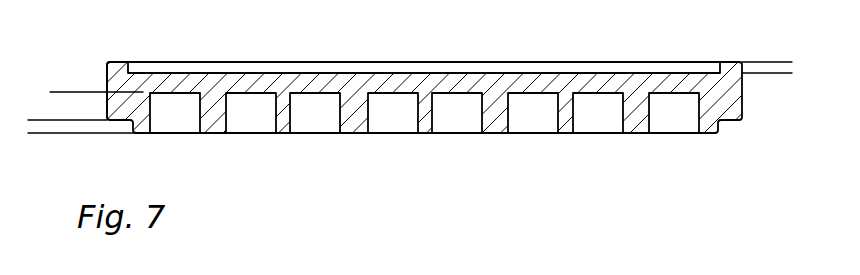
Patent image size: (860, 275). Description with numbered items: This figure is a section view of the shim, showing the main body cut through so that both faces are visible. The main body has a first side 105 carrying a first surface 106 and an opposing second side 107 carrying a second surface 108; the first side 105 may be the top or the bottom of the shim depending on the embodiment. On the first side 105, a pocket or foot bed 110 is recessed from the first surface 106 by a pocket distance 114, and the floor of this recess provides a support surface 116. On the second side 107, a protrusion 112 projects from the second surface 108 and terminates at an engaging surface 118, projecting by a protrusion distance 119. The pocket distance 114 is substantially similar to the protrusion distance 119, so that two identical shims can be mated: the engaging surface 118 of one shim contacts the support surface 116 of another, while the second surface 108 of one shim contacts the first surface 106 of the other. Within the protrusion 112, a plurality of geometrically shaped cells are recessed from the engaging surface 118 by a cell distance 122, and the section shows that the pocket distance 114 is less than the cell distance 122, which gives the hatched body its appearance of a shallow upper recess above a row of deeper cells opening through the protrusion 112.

The first side 105 is at (532, 46).
The first surface 106 is at (117, 62).
The second side 107 is at (559, 142).
The second surface 108 is at (140, 133).
The pocket or foot bed 110 is at (412, 54).
The protrusion 112 is at (361, 143).
The pocket distance 114 is at (777, 105).
The support surface 116 is at (320, 73).
The engaging surface 118 is at (421, 133).
The protrusion distance 119 is at (45, 165).
The cell distance 122 is at (66, 165).